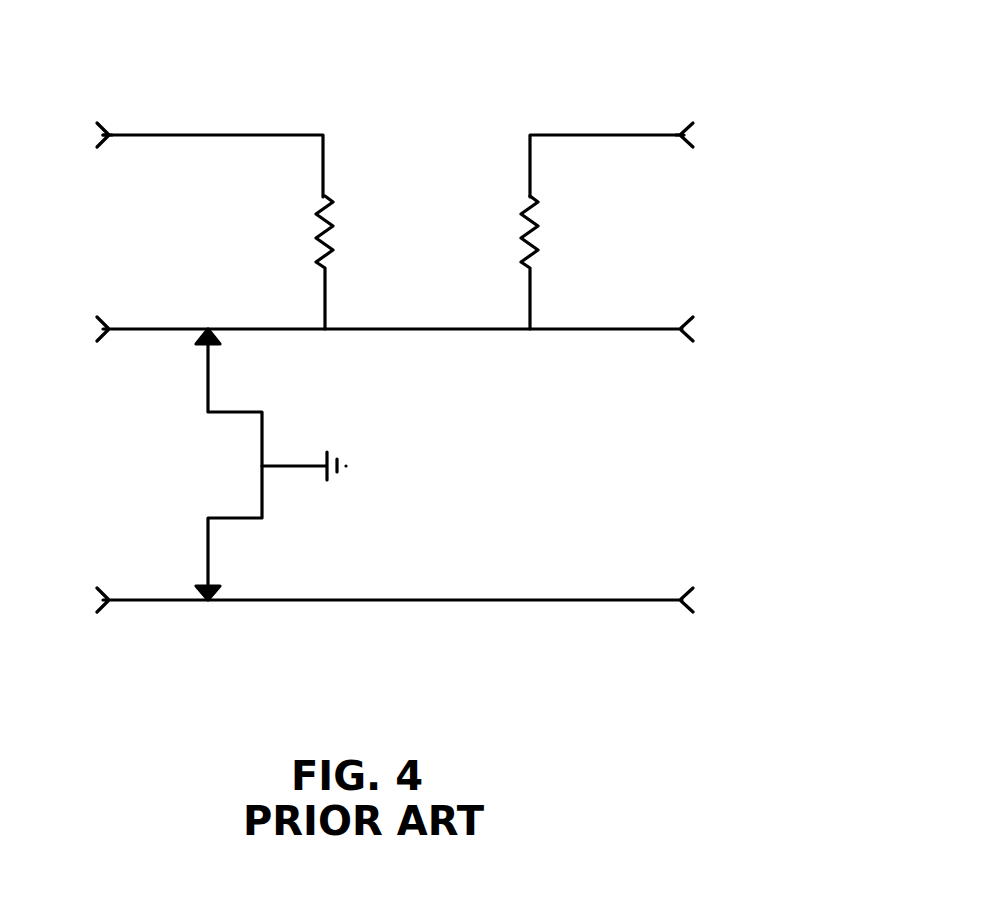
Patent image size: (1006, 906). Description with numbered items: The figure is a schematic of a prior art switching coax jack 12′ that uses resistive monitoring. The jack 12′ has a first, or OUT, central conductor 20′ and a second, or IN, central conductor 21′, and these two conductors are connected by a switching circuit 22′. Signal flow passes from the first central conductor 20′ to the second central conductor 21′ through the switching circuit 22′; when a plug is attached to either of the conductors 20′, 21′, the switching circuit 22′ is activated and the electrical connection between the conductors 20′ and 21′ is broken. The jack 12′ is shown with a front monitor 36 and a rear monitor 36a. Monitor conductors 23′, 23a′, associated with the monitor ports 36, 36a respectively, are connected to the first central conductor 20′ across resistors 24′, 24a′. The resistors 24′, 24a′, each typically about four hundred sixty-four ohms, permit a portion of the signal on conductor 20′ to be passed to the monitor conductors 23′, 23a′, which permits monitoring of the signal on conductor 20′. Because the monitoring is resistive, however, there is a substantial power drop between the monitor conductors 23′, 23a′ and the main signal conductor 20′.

The switching coax jack 12′ is at (800, 403).
The first central conductor 20′ is at (612, 331).
The second central conductor 21′ is at (521, 598).
The switching circuit 22′ is at (233, 452).
The monitor conductor 23′ is at (238, 132).
The monitor conductor 23a′ is at (606, 132).
The resistor 24′ is at (313, 246).
The resistor 24a′ is at (540, 248).
The front monitor 36 is at (102, 132).
The rear monitor 36a is at (681, 133).